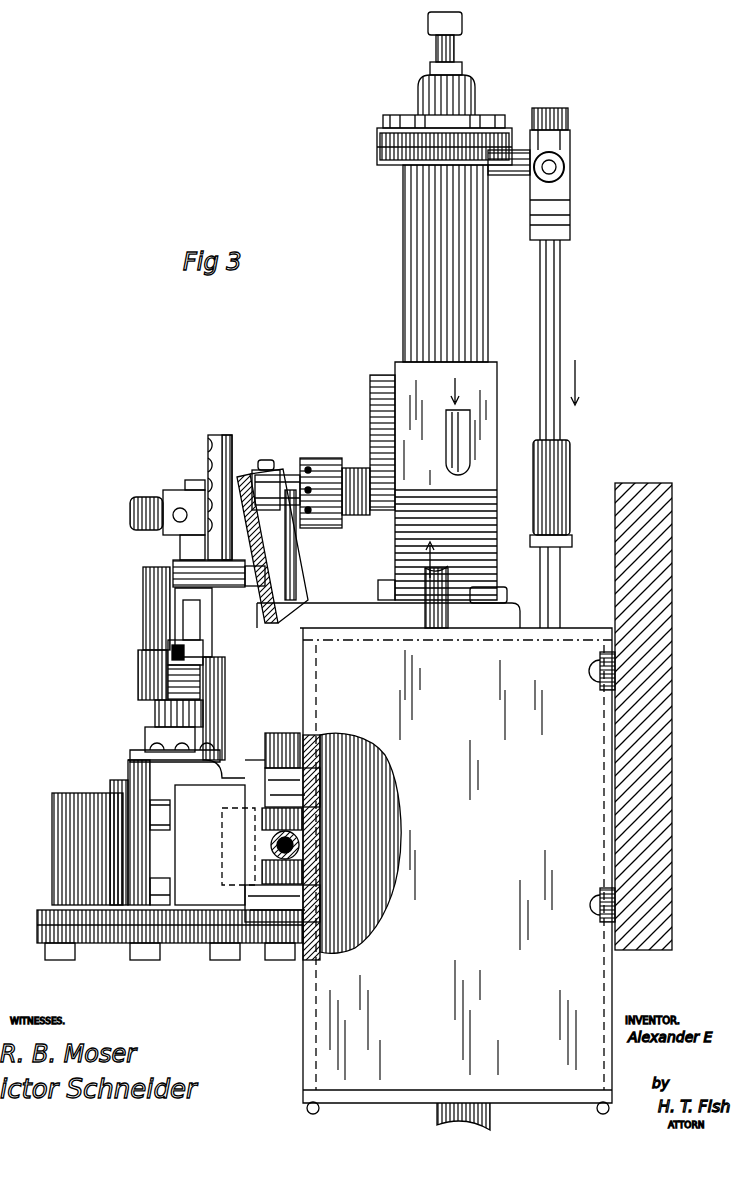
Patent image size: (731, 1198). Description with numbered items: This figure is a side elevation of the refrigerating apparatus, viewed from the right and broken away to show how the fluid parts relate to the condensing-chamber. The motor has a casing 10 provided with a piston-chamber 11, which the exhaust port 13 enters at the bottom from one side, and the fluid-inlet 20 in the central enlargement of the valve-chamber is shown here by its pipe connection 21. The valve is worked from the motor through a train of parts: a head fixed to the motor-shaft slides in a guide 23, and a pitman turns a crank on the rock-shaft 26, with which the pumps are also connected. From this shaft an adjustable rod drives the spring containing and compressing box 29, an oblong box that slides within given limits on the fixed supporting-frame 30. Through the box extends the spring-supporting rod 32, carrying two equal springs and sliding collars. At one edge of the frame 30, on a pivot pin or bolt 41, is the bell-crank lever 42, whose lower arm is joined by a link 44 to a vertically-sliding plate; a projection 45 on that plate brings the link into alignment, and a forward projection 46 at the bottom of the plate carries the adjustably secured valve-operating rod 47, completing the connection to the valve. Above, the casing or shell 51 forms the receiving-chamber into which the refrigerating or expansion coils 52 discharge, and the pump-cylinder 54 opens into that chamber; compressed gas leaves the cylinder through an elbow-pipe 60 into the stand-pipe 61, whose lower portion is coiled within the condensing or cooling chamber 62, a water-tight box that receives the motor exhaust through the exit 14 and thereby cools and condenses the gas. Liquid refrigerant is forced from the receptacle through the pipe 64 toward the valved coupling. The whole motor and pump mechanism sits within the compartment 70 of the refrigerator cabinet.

The casing 10 is at (588, 630).
The piston-chamber 11 is at (52, 843).
The exhaust port 13 is at (178, 922).
The exit 14 is at (292, 787).
The fluid-inlet 20 is at (140, 530).
The pipe connection 21 is at (264, 845).
The guide 23 is at (140, 628).
The rock-shaft 26 is at (272, 476).
The spring containing and compressing box 29 is at (175, 495).
The supporting-frame 30 is at (236, 460).
The spring-supporting rod 32 is at (178, 522).
The pivot pin or bolt 41 is at (283, 571).
The bell-crank lever 42 is at (175, 560).
The link 44 is at (158, 593).
The projection 45 is at (213, 632).
The forward projection 46 is at (186, 663).
The valve-operating rod 47 is at (185, 690).
The casing or shell 51 is at (490, 450).
The refrigerating or expansion coils 52 is at (452, 427).
The pump-cylinder 54 is at (404, 290).
The elbow-pipe 60 is at (520, 183).
The stand-pipe 61 is at (563, 312).
The condensing or cooling chamber 62 is at (404, 855).
The pipe 64 is at (449, 612).
The compartment 70 is at (674, 683).